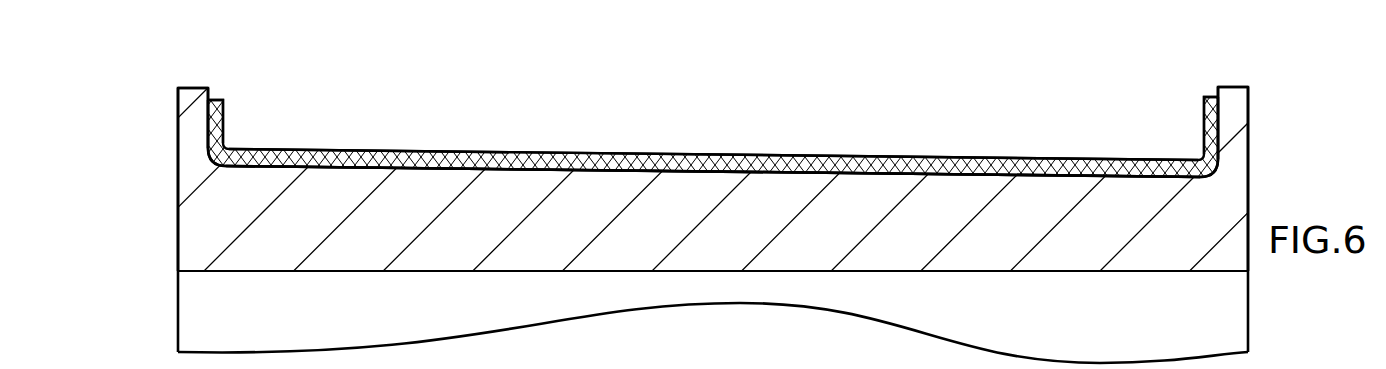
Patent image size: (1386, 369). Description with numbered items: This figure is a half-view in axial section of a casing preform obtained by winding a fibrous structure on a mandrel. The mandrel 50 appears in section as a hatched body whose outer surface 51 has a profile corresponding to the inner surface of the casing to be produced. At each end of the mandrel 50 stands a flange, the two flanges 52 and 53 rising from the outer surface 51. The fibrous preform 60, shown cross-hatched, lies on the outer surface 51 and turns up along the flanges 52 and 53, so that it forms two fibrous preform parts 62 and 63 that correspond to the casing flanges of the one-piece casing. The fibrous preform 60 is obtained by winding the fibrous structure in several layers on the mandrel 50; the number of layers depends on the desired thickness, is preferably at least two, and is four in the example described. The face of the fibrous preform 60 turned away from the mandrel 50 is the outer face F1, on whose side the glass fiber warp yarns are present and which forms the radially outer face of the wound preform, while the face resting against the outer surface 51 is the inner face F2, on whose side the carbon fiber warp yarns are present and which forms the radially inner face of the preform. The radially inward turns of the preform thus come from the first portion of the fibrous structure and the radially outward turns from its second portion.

The mandrel 50 is at (1256, 183).
The outer surface 51 is at (505, 169).
The flange 52 is at (1240, 114).
The flange 53 is at (190, 124).
The fibrous preform 60 is at (491, 122).
The fibrous preform part 62 is at (1204, 118).
The fibrous preform part 63 is at (224, 110).
The outer face F1 is at (388, 147).
The inner face F2 is at (401, 173).